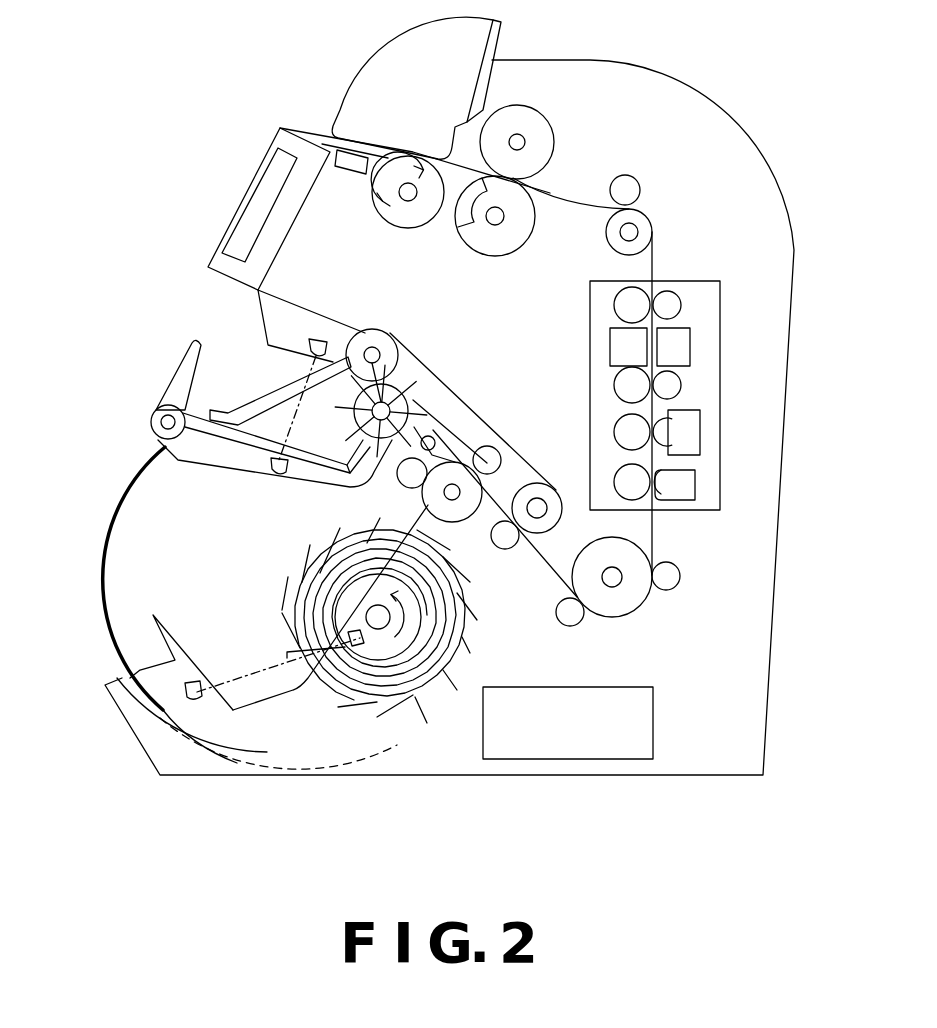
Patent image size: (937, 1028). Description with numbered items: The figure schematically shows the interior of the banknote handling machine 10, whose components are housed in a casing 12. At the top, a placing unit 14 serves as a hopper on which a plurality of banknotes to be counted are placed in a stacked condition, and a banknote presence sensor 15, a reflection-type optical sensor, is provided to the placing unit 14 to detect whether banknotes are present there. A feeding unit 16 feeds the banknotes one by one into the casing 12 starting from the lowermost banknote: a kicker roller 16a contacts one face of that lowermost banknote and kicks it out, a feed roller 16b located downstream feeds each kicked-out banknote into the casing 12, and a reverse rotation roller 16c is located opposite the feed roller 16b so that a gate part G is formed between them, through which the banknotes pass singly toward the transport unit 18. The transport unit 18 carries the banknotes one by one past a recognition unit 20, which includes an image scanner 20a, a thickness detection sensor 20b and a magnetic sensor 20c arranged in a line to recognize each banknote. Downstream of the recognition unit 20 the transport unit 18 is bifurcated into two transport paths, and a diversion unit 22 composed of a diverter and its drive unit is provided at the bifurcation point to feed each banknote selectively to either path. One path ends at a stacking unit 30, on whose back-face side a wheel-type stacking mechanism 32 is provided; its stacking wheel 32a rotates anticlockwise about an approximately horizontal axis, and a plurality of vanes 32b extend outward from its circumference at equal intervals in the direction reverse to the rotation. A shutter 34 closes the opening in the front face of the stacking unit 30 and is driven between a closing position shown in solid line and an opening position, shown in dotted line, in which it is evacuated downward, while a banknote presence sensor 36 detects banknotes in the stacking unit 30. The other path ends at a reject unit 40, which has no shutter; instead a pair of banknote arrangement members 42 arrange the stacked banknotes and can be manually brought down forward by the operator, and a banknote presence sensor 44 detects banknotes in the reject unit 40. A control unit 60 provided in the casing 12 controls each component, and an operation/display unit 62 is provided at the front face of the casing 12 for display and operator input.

The banknote handling machine 10 is at (181, 212).
The casing 12 is at (667, 88).
The placing unit 14 is at (401, 81).
The banknote presence sensor 15 is at (343, 160).
The feeding unit 16 is at (434, 255).
The kicker roller 16a is at (402, 218).
The feed roller 16b is at (498, 240).
The reverse rotation roller 16c is at (540, 132).
The gate part G is at (522, 175).
The transport unit 18 is at (655, 540).
The recognition unit 20 is at (727, 382).
The image scanner 20a is at (682, 345).
The thickness detection sensor 20b is at (688, 429).
The magnetic sensor 20c is at (678, 487).
The diversion unit 22 is at (440, 450).
The stacking unit 30 is at (208, 596).
The wheel-type stacking mechanism 32 is at (338, 720).
The stacking wheel 32a is at (405, 665).
The vanes 32b is at (423, 697).
The shutter 34 is at (115, 523).
The banknote presence sensor 36 is at (188, 683).
The reject unit 40 is at (243, 363).
The banknote arrangement members 42 is at (180, 377).
The banknote presence sensor 44 is at (271, 474).
The control unit 60 is at (653, 718).
The operation/display unit 62 is at (273, 172).